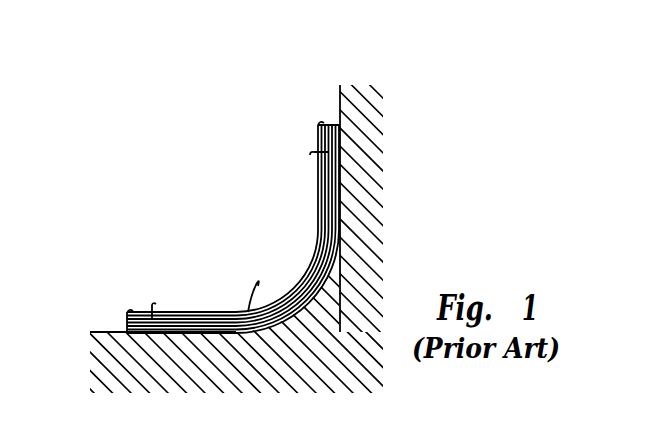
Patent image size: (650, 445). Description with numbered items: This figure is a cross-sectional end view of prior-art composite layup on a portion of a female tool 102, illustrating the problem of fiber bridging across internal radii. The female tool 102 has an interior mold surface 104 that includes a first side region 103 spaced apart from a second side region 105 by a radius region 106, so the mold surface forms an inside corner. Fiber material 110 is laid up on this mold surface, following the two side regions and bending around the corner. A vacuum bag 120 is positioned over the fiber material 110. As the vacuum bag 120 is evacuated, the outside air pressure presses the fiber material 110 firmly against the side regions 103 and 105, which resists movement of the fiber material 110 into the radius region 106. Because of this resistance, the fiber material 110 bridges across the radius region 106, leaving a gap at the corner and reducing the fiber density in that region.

The female tool 102 is at (382, 118).
The first side region 103 is at (340, 105).
The interior mold surface 104 is at (340, 90).
The second side region 105 is at (115, 332).
The radius region 106 is at (303, 277).
The fiber material 110 is at (321, 128).
The vacuum bag 120 is at (180, 311).